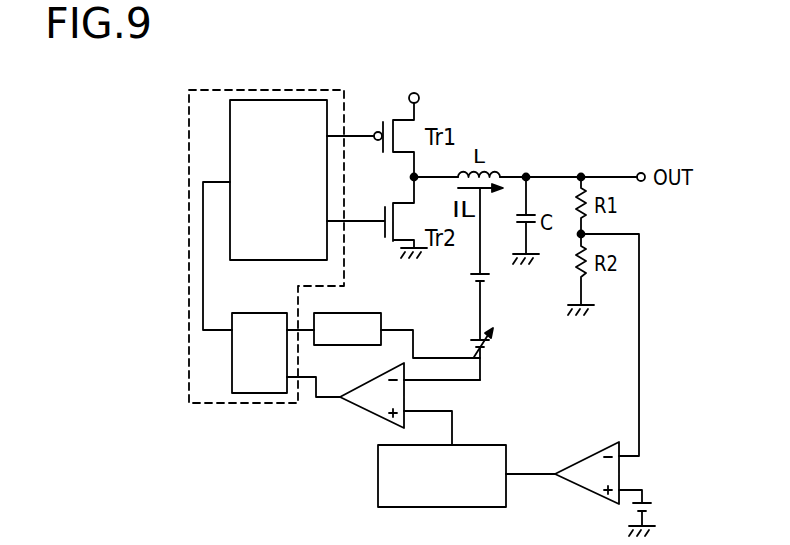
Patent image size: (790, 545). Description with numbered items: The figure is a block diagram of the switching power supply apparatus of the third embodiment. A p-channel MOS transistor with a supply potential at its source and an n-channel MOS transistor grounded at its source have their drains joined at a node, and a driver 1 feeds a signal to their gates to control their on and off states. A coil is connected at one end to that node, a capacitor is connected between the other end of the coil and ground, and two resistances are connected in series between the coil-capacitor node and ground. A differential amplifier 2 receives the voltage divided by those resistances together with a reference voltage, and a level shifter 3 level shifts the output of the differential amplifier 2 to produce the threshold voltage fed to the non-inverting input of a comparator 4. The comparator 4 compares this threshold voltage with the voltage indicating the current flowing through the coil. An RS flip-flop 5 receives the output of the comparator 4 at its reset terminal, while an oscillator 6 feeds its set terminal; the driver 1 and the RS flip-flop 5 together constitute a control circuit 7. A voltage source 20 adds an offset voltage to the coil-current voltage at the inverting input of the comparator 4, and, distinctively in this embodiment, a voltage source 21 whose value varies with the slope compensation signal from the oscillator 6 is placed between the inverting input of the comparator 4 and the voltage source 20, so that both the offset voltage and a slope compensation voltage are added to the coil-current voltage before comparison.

The driver 1 is at (294, 100).
The differential amplifier 2 is at (588, 456).
The level shifter 3 is at (378, 478).
The comparator 4 is at (376, 414).
The RS flip-flop 5 is at (262, 393).
The oscillator 6 is at (348, 313).
The control circuit 7 is at (266, 90).
The voltage source 20 is at (471, 279).
The voltage source 21 is at (476, 350).